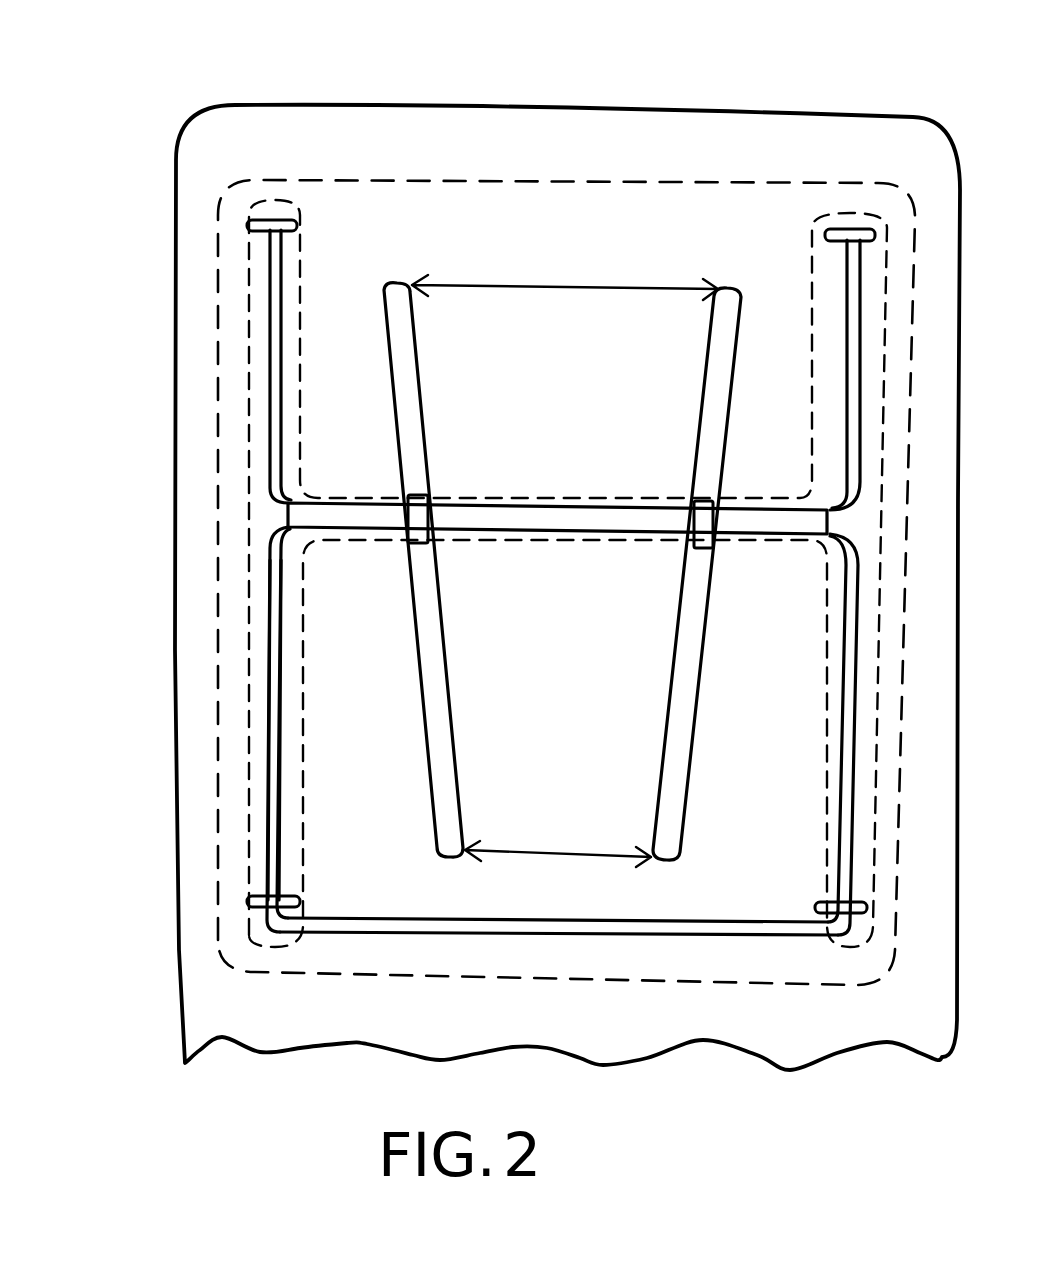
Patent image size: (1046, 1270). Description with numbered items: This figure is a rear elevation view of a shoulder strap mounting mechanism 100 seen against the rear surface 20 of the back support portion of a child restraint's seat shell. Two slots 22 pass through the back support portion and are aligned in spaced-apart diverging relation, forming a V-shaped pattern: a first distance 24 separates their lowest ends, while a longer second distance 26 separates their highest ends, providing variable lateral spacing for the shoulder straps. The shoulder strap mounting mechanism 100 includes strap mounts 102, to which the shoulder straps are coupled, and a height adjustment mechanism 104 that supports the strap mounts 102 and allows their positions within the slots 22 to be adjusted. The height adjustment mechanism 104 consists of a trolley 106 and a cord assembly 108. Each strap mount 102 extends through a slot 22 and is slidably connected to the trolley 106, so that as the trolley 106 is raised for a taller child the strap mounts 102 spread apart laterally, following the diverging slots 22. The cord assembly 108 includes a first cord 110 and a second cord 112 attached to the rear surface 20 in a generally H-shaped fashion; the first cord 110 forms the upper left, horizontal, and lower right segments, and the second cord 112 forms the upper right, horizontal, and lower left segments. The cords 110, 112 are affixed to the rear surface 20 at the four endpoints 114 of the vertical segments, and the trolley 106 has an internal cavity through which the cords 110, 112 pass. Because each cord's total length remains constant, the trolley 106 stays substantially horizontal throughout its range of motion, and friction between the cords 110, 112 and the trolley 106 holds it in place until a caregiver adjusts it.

The rear surface 20 is at (492, 150).
The slots 22 is at (447, 680).
The first distance 24 is at (527, 848).
The second distance 26 is at (505, 285).
The shoulder strap mounting mechanism 100 is at (207, 447).
The strap mounts 102 is at (425, 493).
The height adjustment mechanism 104 is at (232, 290).
The trolley 106 is at (740, 540).
The cord assembly 108 is at (292, 701).
The first cord 110 is at (280, 322).
The second cord 112 is at (847, 362).
The endpoints 114 is at (290, 218).